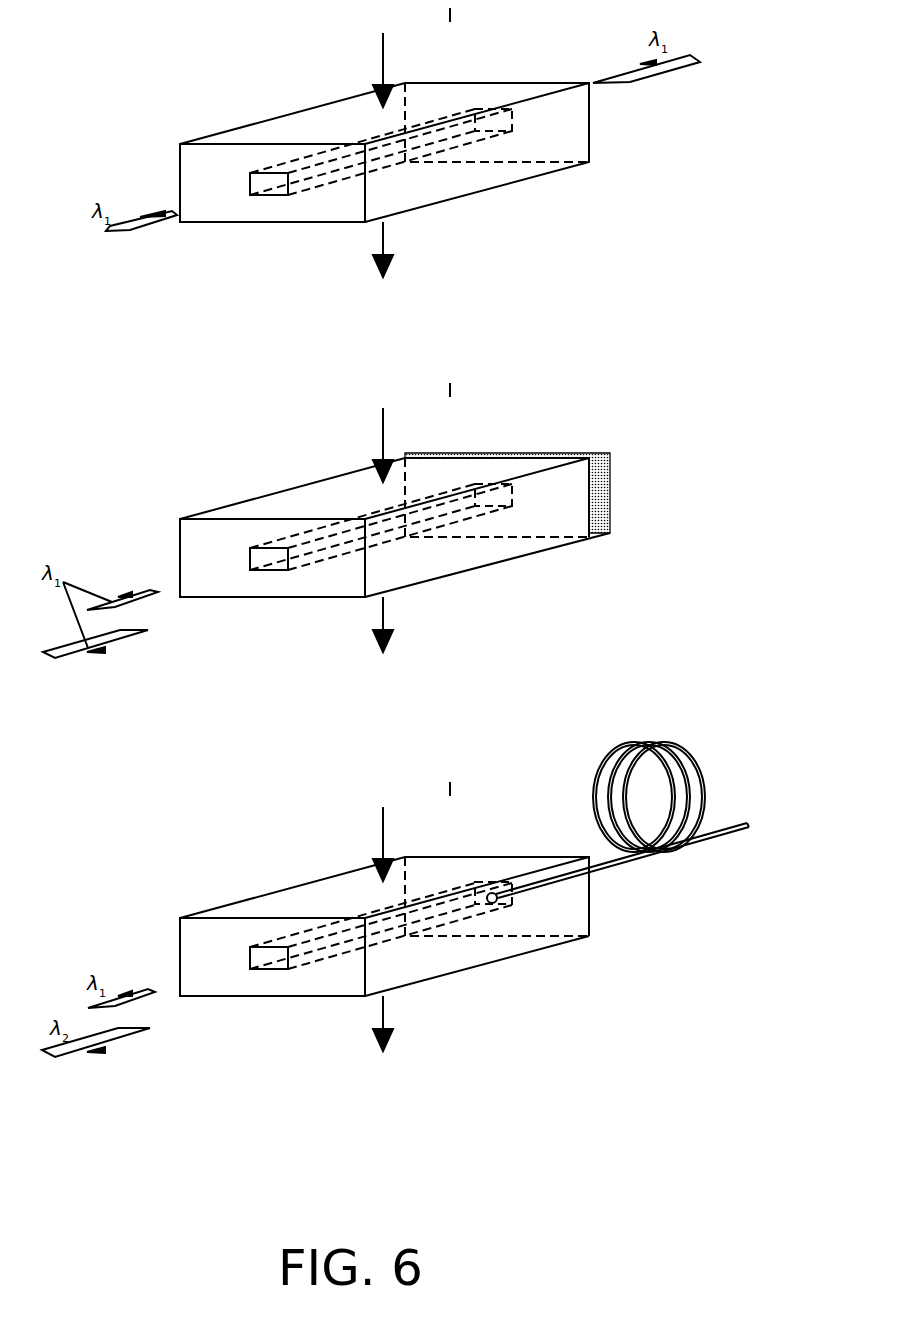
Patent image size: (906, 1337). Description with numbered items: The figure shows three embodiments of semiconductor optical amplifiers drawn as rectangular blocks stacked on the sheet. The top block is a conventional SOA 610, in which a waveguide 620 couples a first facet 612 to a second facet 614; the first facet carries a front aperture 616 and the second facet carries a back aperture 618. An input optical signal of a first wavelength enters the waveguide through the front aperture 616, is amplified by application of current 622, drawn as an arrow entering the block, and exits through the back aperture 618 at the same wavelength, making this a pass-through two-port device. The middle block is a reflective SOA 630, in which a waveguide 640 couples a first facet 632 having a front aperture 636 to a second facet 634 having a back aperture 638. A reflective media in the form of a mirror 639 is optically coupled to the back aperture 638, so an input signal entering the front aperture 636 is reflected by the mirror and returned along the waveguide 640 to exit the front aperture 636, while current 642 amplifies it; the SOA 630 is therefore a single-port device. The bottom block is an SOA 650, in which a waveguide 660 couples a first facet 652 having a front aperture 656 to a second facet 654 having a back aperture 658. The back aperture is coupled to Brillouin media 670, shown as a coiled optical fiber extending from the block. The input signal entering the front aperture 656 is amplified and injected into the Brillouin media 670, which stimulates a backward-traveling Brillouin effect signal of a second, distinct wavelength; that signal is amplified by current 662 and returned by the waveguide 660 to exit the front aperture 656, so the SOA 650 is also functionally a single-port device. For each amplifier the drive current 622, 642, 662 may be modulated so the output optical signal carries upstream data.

The semiconductor optical amplifier (SOA) 610 is at (156, 115).
The first facet 612 is at (203, 210).
The second facet 614 is at (572, 147).
The front aperture 616 is at (250, 183).
The back aperture 618 is at (512, 115).
The waveguide 620 is at (346, 180).
The current 622 is at (393, 40).
The semiconductor optical amplifier (SOA) 630 is at (154, 493).
The first facet 632 is at (203, 585).
The second facet 634 is at (573, 520).
The front aperture 636 is at (250, 560).
The back aperture 638 is at (512, 489).
The mirror 639 is at (603, 472).
The waveguide 640 is at (346, 553).
The current 642 is at (393, 418).
The semiconductor optical amplifier (SOA) 650 is at (156, 882).
The first facet 652 is at (202, 982).
The second facet 654 is at (565, 922).
The front aperture 656 is at (250, 960).
The back aperture 658 is at (513, 900).
The waveguide 660 is at (346, 951).
The current 662 is at (393, 815).
The Brillouin media 670 is at (708, 772).